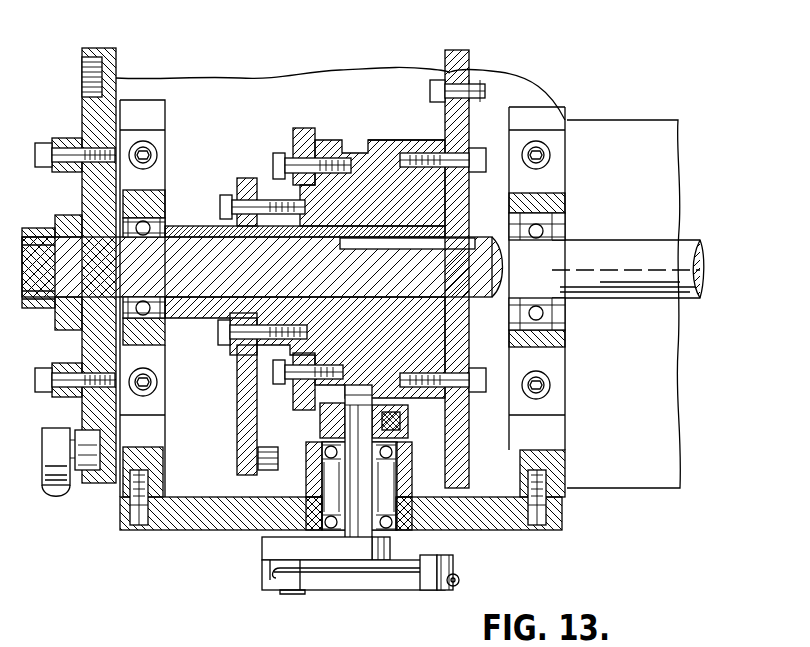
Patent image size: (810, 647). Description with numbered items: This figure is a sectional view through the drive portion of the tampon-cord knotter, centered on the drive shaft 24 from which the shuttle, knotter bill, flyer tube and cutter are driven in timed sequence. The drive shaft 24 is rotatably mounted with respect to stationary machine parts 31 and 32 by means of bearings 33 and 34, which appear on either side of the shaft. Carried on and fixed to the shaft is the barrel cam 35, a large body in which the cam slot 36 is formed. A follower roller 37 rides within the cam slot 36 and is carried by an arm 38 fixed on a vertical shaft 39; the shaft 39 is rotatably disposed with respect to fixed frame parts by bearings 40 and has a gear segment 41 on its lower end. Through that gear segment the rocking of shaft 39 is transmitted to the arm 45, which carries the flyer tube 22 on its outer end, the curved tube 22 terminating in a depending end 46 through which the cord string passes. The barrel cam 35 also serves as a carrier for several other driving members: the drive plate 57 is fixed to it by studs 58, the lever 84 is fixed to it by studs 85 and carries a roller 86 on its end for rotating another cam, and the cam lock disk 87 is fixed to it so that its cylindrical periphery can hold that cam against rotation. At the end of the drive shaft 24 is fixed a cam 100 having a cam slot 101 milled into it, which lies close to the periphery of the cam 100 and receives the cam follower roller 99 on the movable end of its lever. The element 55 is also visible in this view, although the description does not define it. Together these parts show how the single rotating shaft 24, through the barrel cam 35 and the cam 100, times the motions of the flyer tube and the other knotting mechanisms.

The flyer tube 22 is at (350, 575).
The drive shaft 24 is at (614, 242).
The stationary machine part 31 is at (553, 350).
The stationary machine part 32 is at (152, 352).
The bearing 33 is at (560, 228).
The bearing 34 is at (166, 226).
The barrel cam 35 is at (414, 126).
The cam slot 36 is at (347, 152).
The follower roller 37 is at (330, 410).
The arm 38 is at (408, 428).
The shaft 39 is at (365, 498).
The bearings 40 is at (395, 456).
The gear segment 41 is at (390, 548).
The arm 45 is at (384, 582).
The depending end 46 is at (264, 573).
The element 55 is at (227, 639).
The drive plate 57 is at (460, 124).
The studs 58 is at (472, 170).
The lever 84 is at (237, 412).
The studs 85 is at (273, 163).
The roller 86 is at (282, 448).
The cam lock disk 87 is at (300, 128).
The cam follower roller 99 is at (90, 486).
The cam 100 is at (102, 48).
The cam slot 101 is at (82, 78).